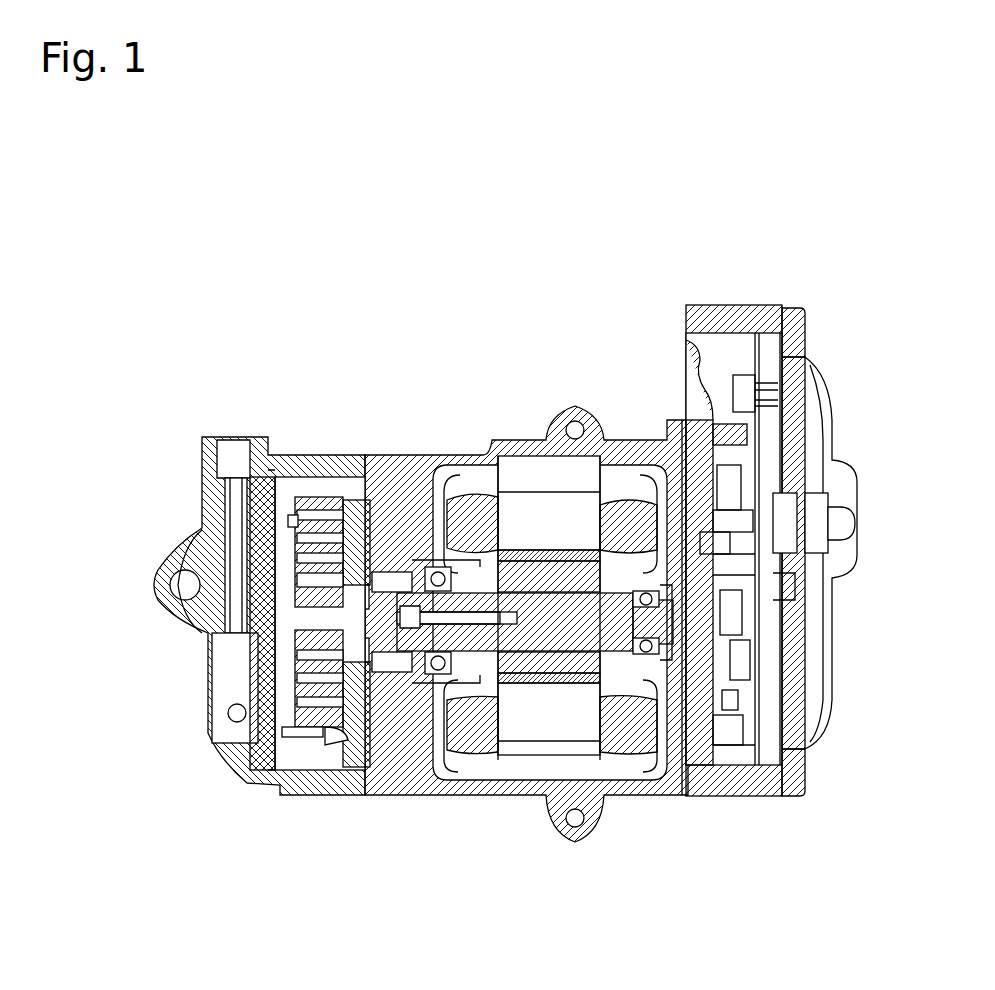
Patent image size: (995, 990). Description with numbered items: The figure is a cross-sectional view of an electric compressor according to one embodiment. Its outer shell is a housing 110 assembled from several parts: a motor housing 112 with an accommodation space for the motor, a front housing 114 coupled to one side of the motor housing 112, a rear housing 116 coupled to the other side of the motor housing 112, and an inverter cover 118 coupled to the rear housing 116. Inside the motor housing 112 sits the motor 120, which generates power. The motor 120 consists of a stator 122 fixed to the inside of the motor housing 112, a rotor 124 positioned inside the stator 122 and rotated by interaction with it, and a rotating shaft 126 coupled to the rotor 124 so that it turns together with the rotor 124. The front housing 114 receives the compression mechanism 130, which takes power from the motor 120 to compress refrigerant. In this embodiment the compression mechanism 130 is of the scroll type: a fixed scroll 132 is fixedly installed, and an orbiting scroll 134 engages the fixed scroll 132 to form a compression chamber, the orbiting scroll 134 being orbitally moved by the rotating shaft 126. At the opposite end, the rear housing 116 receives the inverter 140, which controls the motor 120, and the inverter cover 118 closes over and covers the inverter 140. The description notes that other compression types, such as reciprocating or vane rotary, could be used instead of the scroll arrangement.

The housing 110 is at (315, 180).
The motor housing 112 is at (512, 445).
The front housing 114 is at (293, 445).
The rear housing 116 is at (706, 305).
The inverter cover 118 is at (784, 305).
The motor 120 is at (625, 915).
The stator 122 is at (525, 660).
The rotor 124 is at (580, 660).
The rotating shaft 126 is at (512, 640).
The compression mechanism 130 is at (300, 900).
The fixed scroll 132 is at (300, 742).
The orbiting scroll 134 is at (355, 742).
The inverter 140 is at (741, 737).